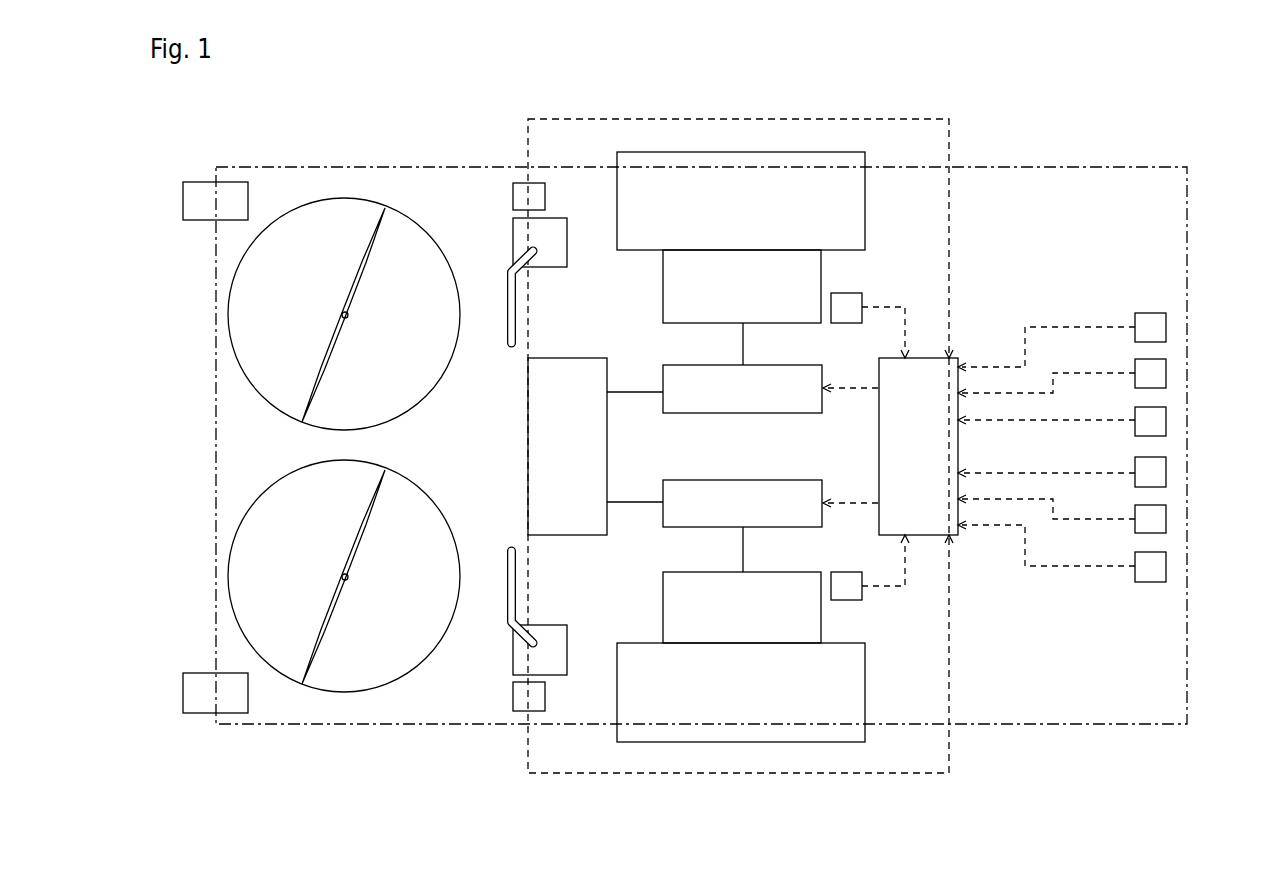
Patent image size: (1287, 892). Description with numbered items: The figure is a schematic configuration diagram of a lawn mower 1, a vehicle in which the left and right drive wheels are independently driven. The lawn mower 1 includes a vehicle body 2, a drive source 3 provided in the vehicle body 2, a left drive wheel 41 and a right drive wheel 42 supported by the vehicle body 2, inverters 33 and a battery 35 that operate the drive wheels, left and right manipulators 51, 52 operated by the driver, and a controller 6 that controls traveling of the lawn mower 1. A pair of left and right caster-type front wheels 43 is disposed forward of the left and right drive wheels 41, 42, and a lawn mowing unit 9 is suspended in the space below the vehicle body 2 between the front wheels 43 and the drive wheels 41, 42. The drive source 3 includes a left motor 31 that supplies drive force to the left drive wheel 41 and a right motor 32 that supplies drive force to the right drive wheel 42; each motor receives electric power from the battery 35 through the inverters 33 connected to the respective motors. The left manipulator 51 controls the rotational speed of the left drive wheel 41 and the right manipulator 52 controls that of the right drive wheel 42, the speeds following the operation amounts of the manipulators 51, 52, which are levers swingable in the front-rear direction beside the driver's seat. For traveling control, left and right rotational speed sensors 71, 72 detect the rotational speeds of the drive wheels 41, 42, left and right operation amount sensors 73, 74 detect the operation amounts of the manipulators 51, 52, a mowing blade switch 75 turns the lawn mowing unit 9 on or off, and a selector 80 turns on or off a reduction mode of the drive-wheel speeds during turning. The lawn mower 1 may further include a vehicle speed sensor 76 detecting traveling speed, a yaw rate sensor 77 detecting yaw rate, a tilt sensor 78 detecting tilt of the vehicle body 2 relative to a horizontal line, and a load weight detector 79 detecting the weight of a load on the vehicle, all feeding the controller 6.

The lawn mower 1 is at (1082, 108).
The vehicle body 2 is at (298, 167).
The drive source 3 is at (689, 446).
The controller 6 is at (958, 445).
The lawn mowing unit 9 is at (250, 380).
The left motor 31 is at (663, 586).
The right motor 32 is at (663, 305).
The inverters 33 is at (766, 413).
The battery 35 is at (528, 446).
The left drive wheel 41 is at (797, 742).
The right drive wheel 42 is at (797, 152).
The front wheels 43 is at (196, 182).
The left manipulator 51 is at (507, 566).
The right manipulator 52 is at (507, 332).
The left rotational speed sensor 71 is at (846, 600).
The right rotational speed sensor 72 is at (846, 293).
The left operation amount sensor 73 is at (513, 695).
The right operation amount sensor 74 is at (513, 197).
The mowing blade switch 75 is at (1166, 327).
The vehicle speed sensor 76 is at (1166, 374).
The yaw rate sensor 77 is at (1166, 421).
The tilt sensor 78 is at (1166, 472).
The load weight detector 79 is at (1166, 519).
The selector 80 is at (1166, 567).